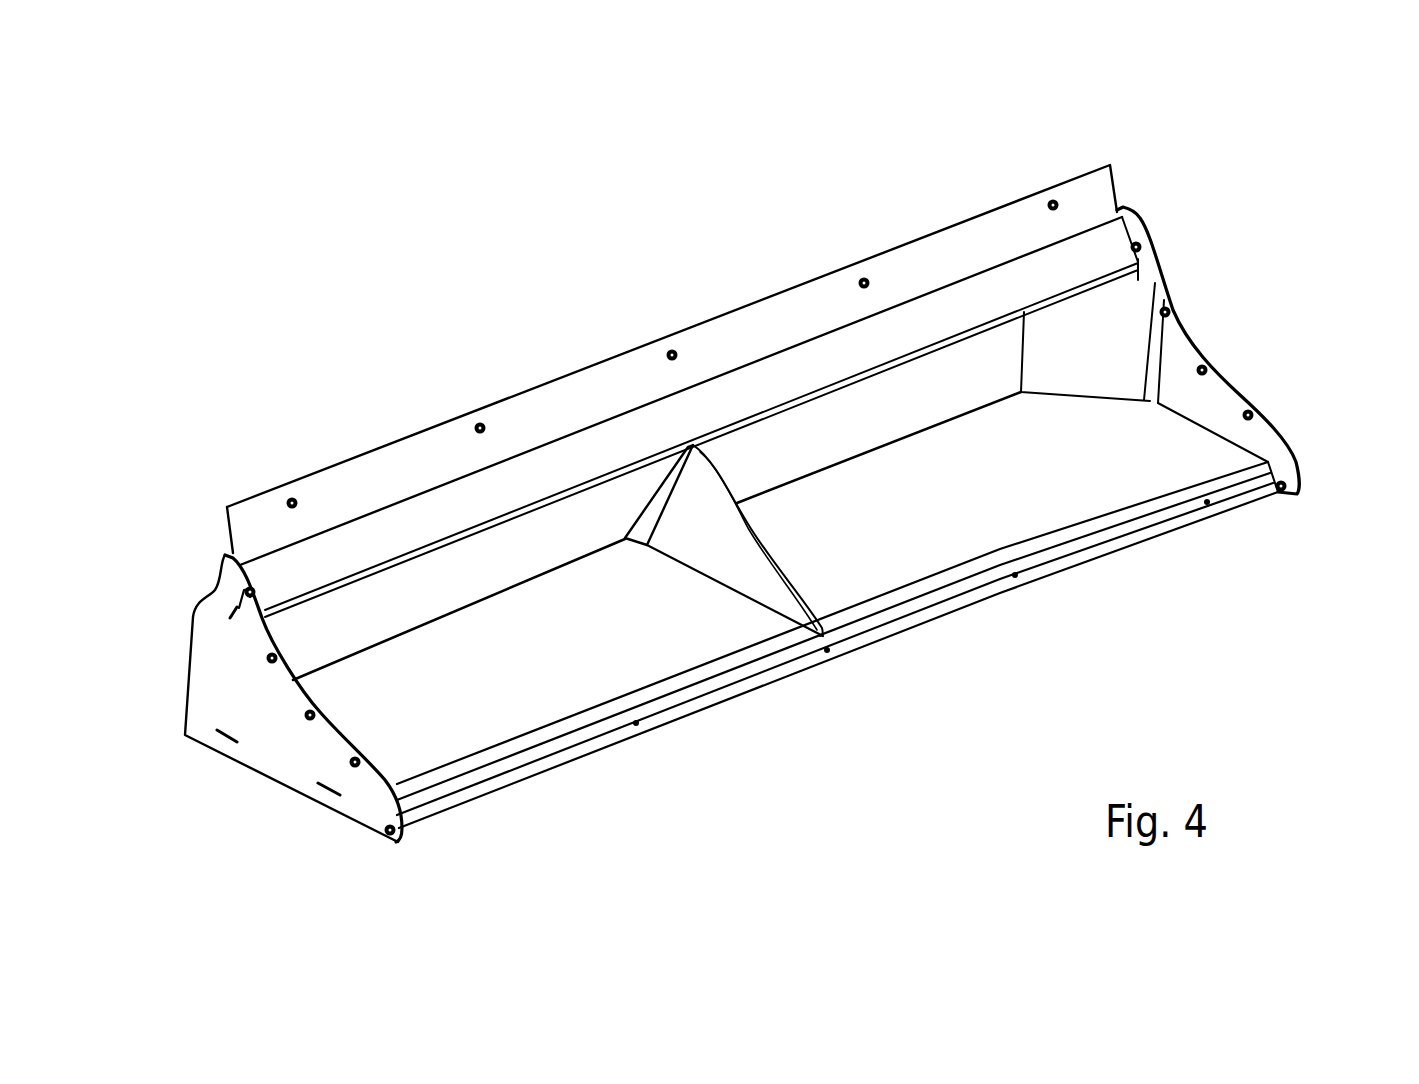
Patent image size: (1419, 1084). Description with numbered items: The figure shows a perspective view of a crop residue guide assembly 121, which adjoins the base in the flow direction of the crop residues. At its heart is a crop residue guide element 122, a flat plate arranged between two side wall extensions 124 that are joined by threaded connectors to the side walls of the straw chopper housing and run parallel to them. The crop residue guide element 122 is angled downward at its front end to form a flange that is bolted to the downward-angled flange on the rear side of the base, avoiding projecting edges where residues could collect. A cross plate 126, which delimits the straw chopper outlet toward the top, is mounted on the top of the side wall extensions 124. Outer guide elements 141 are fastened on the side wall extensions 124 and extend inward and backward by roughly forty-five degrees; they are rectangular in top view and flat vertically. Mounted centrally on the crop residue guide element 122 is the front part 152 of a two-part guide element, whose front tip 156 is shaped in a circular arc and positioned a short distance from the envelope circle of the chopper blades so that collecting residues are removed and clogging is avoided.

The crop residue guide assembly 121 is at (557, 345).
The crop residue guide element 122 is at (522, 693).
The side wall extensions 124 is at (273, 753).
The cross plate 126 is at (362, 483).
The outer guide elements 141 is at (1110, 328).
The front part 152 is at (700, 538).
The front tip 156 is at (763, 555).